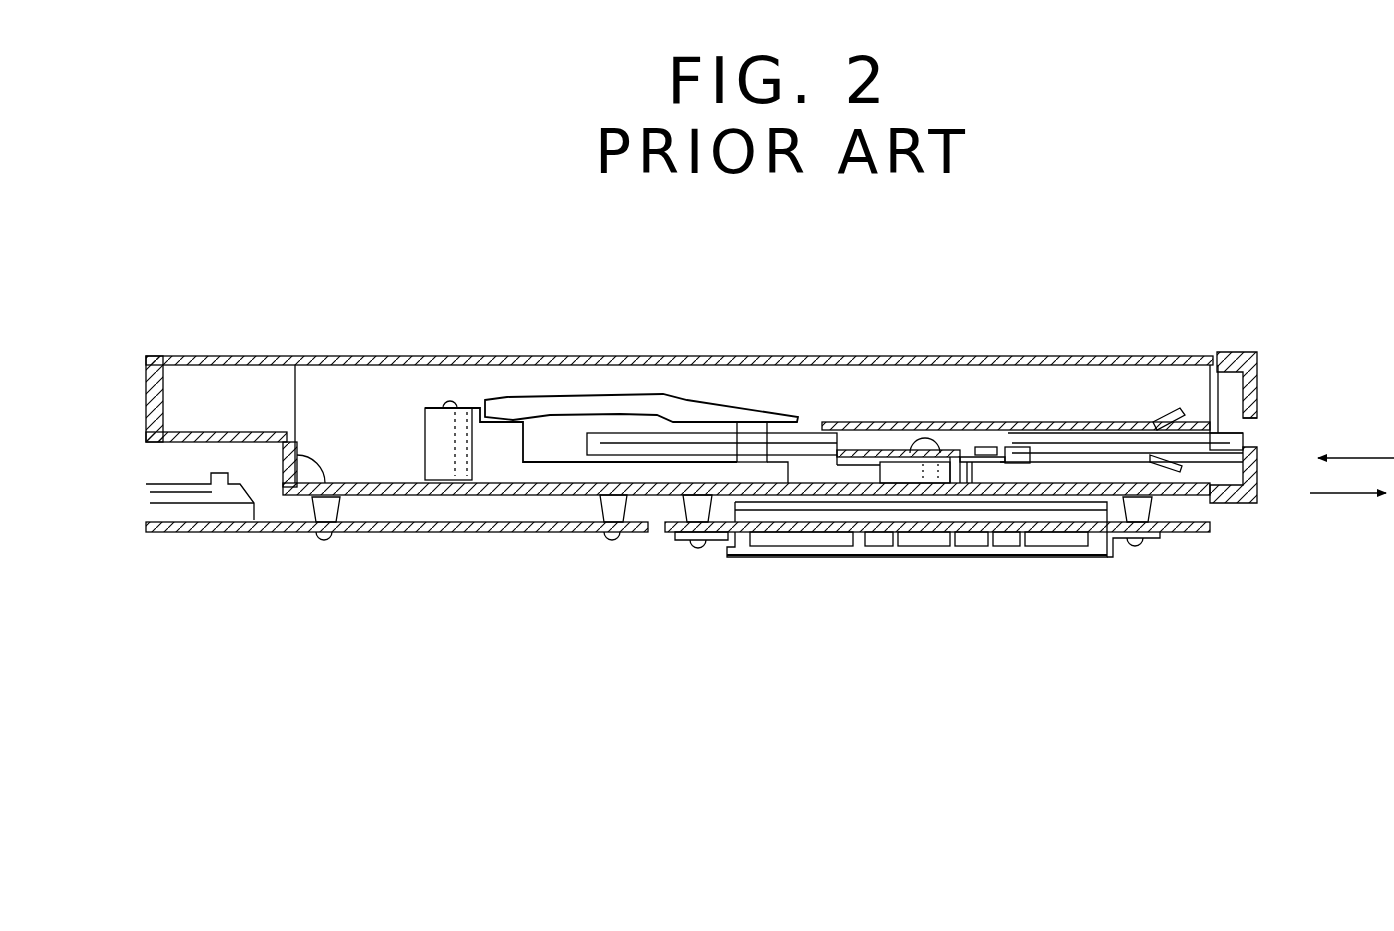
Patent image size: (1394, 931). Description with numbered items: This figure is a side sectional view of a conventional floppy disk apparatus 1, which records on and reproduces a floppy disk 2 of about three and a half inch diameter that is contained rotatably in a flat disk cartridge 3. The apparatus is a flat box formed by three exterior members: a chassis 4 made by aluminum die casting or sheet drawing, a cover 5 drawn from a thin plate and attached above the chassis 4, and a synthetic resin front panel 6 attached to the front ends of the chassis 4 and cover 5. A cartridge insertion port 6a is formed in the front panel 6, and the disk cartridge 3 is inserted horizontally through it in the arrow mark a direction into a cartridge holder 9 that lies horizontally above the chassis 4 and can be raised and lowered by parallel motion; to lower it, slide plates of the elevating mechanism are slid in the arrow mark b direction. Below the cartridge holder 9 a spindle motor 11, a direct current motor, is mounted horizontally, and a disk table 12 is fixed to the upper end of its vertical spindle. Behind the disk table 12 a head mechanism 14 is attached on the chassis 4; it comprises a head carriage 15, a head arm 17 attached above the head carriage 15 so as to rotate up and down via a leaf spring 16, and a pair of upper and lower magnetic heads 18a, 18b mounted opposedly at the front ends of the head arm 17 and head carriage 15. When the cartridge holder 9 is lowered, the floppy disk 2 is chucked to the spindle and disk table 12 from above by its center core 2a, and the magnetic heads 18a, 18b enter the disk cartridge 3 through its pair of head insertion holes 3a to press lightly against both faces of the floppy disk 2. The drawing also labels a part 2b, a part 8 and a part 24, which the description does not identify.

The floppy disk apparatus 1 is at (1232, 326).
The floppy disk 2 is at (637, 440).
The center core 2a is at (864, 453).
The chassis portion 2b is at (910, 447).
The disk cartridge 3 is at (1187, 433).
The head insertion holes 3a is at (580, 468).
The chassis 4 is at (762, 497).
The cover 5 is at (795, 356).
The front panel 6 is at (1258, 372).
The cartridge insertion port 6a is at (1257, 422).
The lower cover 8 is at (403, 532).
The cartridge holder 9 is at (1077, 422).
The spindle motor 11 is at (937, 440).
The disk table 12 is at (853, 462).
The head mechanism 14 is at (413, 411).
The head carriage 15 is at (645, 485).
The leaf spring 16 is at (463, 403).
The head arm 17 is at (663, 402).
The upper magnetic head 18a is at (750, 428).
The lower magnetic head 18b is at (750, 463).
The stopper 24 is at (988, 447).
The arrow mark a direction a is at (1356, 433).
The arrow mark b direction b is at (1350, 517).